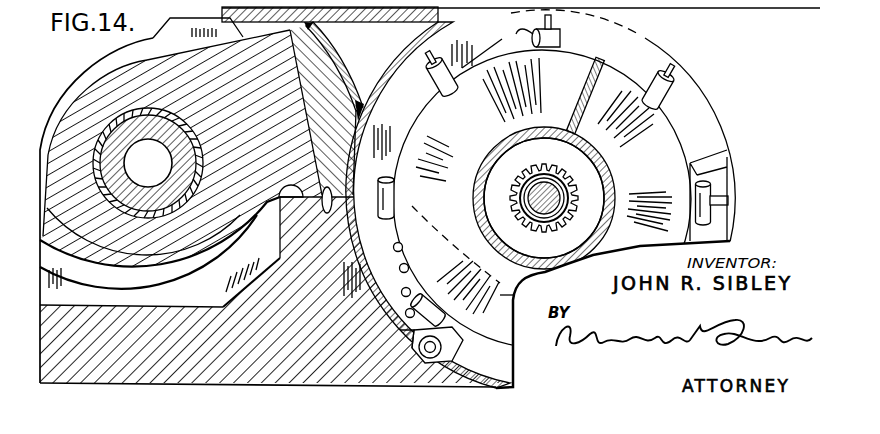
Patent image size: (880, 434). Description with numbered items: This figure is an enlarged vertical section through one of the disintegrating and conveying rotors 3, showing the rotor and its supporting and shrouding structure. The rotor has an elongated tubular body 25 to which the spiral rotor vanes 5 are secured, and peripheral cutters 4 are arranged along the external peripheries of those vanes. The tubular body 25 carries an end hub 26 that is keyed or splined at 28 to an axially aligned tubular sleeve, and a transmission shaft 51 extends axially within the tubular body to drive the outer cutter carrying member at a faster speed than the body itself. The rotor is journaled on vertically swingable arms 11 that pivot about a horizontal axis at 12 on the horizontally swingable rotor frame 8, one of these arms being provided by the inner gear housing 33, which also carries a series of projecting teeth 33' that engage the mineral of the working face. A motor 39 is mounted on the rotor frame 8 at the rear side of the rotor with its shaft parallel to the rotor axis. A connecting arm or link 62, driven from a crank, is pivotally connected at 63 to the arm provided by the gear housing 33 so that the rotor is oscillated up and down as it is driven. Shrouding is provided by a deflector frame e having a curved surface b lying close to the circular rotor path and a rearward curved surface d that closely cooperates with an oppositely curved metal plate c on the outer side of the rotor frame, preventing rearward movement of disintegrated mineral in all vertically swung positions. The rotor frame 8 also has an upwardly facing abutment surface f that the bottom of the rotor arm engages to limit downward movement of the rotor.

The disintegrating and conveying rotor 3 is at (482, 158).
The peripheral cutter 4 is at (560, 38).
The spiral rotor vane 5 is at (598, 77).
The horizontally swingable rotor frame 8 is at (107, 305).
The vertically swingable arm 11 is at (339, 48).
The horizontal pivot axis 12 is at (176, 210).
The tubular body 25 is at (514, 138).
The end hub 26 is at (589, 218).
The key or spline connection 28 is at (540, 200).
The inner gear housing 33 is at (497, 44).
The projecting teeth 33' is at (725, 186).
The motor 39 is at (153, 42).
The transmission shaft 51 is at (556, 194).
The connecting arm or link 62 is at (395, 288).
The pivotal connection 63 is at (441, 356).
The curved surface b is at (417, 63).
The oppositely curved metal plate c is at (363, 250).
The rearward curved surface d is at (333, 190).
The deflector frame e is at (385, 22).
The upwardly facing abutment surface f is at (278, 202).